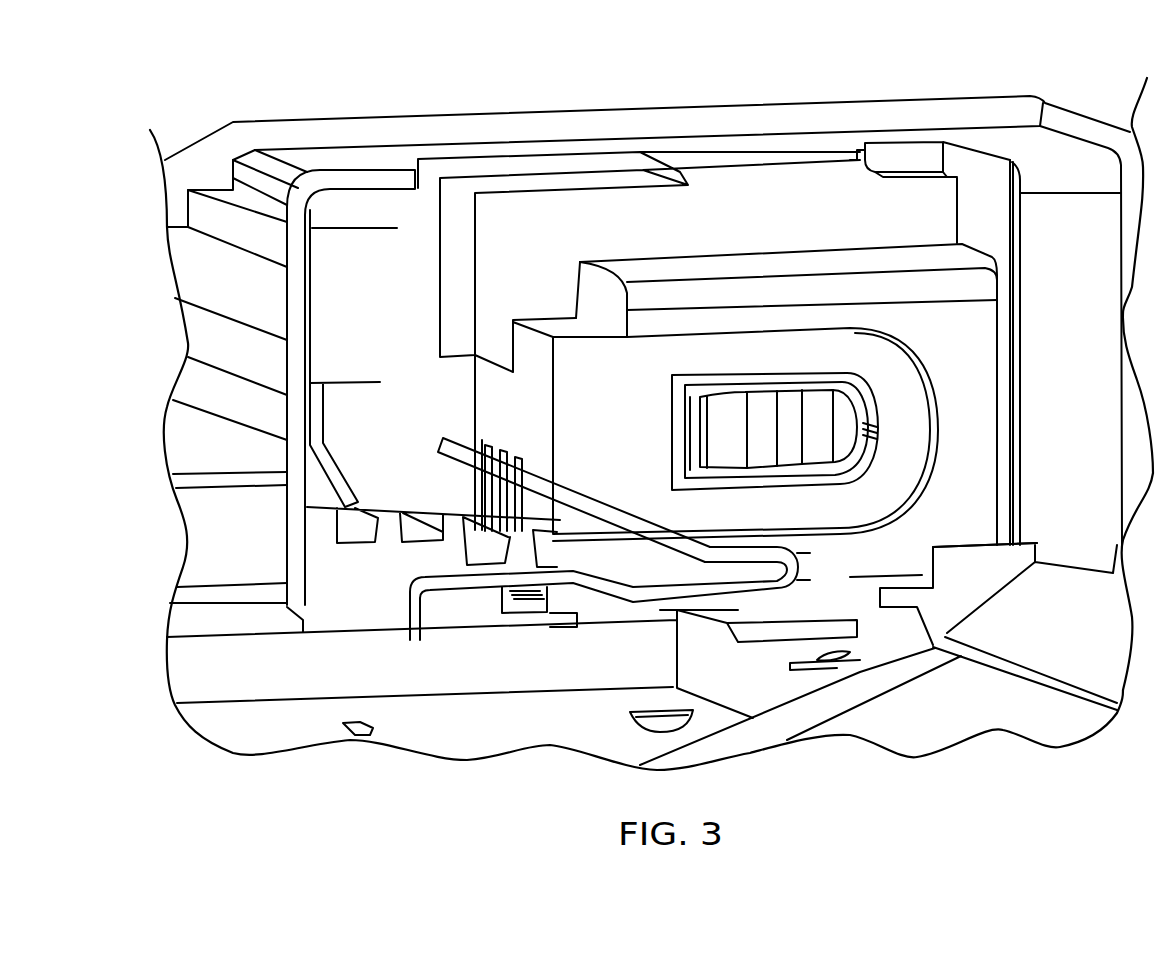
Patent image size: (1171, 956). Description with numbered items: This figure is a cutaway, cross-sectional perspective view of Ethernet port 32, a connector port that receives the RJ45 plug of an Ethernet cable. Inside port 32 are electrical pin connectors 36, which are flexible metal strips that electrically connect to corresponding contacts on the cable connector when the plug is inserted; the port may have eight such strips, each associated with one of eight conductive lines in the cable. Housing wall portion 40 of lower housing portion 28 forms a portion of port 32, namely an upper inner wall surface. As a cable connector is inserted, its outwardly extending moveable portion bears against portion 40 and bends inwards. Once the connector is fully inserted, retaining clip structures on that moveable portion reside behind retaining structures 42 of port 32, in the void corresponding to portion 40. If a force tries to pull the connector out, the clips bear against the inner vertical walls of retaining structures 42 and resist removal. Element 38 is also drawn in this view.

The lower housing portion 28 is at (400, 132).
The Ethernet port 32 is at (683, 76).
The electrical pin connectors 36 is at (563, 492).
The connector window 38 is at (813, 400).
The housing wall portion 40 is at (828, 147).
The retaining structures 42 is at (902, 155).